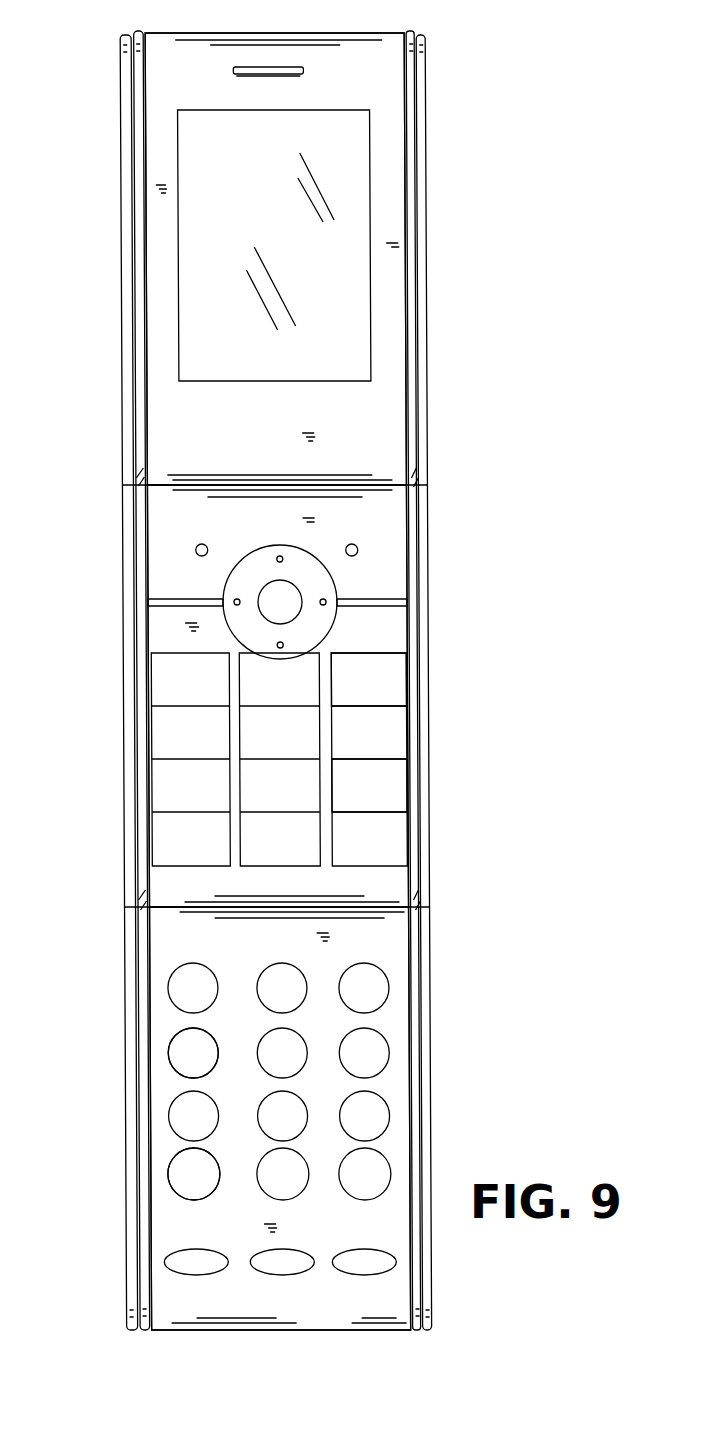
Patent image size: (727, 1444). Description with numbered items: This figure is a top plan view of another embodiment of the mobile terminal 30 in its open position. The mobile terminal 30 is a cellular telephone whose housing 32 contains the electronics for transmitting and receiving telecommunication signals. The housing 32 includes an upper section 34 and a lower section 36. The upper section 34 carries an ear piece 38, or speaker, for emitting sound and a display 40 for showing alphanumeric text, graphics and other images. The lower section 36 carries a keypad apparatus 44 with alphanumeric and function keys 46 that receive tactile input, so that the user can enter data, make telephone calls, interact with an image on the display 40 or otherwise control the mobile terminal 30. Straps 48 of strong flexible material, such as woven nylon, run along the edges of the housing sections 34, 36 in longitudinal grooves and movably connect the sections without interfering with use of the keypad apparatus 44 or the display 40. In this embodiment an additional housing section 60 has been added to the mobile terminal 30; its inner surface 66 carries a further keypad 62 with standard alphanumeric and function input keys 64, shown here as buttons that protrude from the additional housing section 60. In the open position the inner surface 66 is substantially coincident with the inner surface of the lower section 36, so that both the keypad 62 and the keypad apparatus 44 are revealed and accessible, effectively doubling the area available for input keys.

The mobile terminal 30 is at (511, 398).
The housing 32 is at (115, 531).
The upper section 34 is at (390, 123).
The lower section 36 is at (398, 628).
The ear piece 38 is at (296, 76).
The display 40 is at (251, 381).
The keypad apparatus 44 is at (152, 728).
The alphanumeric and function keys 46 is at (395, 688).
The straps 48 is at (132, 117).
The additional housing section 60 is at (438, 993).
The keypad 62 is at (401, 1074).
The input keys 64 is at (180, 1048).
The inner surface 66 is at (397, 937).